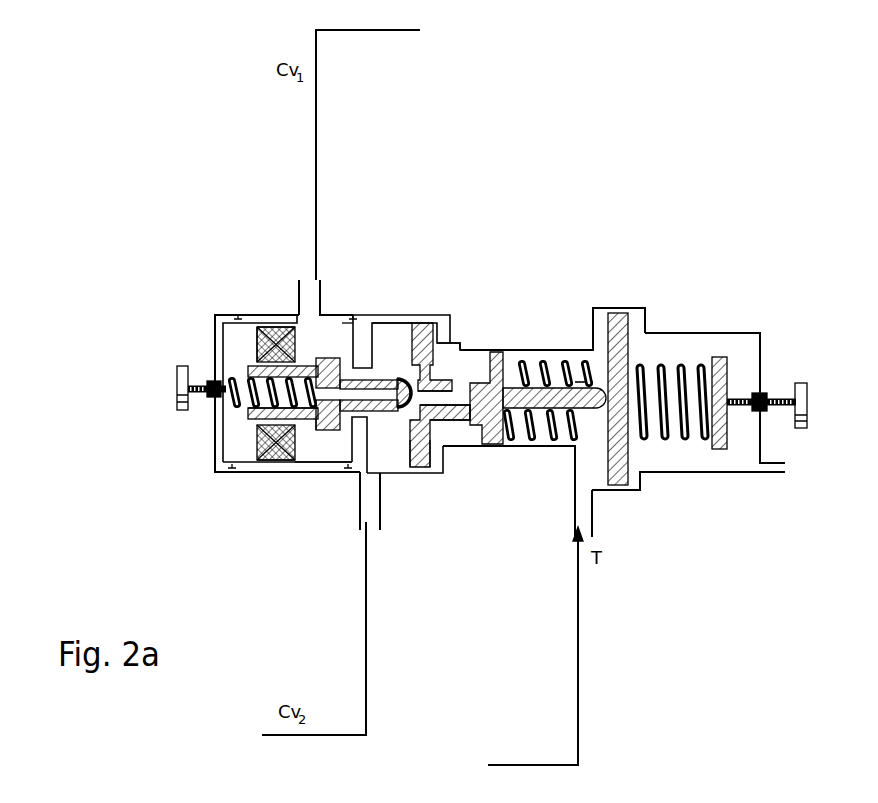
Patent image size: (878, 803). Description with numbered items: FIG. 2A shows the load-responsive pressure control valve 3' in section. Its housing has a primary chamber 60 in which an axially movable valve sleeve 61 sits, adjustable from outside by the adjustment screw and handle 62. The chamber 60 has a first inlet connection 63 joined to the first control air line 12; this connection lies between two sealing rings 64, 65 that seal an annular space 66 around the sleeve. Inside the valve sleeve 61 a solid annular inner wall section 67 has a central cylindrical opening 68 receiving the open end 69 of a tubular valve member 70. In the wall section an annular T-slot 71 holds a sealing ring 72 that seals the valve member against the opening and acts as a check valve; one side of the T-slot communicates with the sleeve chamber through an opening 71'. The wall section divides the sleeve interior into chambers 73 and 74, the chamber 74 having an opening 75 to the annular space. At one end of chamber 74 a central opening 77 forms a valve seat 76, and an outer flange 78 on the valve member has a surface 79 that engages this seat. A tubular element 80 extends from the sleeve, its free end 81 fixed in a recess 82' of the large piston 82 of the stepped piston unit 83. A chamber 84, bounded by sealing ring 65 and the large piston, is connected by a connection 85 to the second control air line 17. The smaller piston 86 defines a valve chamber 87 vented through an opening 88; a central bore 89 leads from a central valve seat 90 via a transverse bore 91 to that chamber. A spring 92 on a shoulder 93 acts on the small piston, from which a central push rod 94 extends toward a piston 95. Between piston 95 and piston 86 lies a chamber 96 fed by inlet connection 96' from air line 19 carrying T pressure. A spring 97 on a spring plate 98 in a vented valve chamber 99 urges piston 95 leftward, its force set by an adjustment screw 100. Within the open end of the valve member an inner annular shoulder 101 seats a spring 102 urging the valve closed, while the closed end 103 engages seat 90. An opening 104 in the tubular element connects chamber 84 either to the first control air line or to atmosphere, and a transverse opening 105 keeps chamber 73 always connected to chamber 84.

The Cv1 air line 12 is at (370, 31).
The Cv2 air line 17 is at (367, 662).
The air line 19 is at (508, 766).
The primary chamber 60 is at (215, 472).
The valve sleeve 61 is at (222, 432).
The adjustment screw and handle 62 is at (180, 385).
The first inlet connection 63 is at (300, 285).
The sealing ring 64 is at (232, 472).
The sealing ring 65 is at (348, 470).
The annular space 66 is at (262, 473).
The inner wall section 67 is at (275, 328).
The central cylindrical opening 68 is at (296, 358).
The open end 69 is at (250, 413).
The tubular valve member 70 is at (372, 323).
The annular T-slot 71 is at (258, 323).
The opening 71' is at (270, 471).
The sealing ring 72 is at (268, 340).
The chamber 73 is at (232, 453).
The valve sleeve chamber 74 is at (298, 460).
The opening 75 is at (317, 330).
The valve seat 76 is at (345, 414).
The central opening 77 is at (367, 436).
The outer flange 78 is at (330, 462).
The surface 79 is at (357, 350).
The tubular element 80 is at (430, 335).
The free end 81 is at (437, 467).
The large cross-sectional area piston 82 is at (440, 470).
The recess 82' is at (468, 329).
The stepped piston unit 83 is at (490, 447).
The chamber 84 is at (386, 345).
The connection 85 is at (362, 530).
The smaller cross-sectional area piston 86 is at (505, 447).
The valve chamber 87 is at (455, 340).
The opening 88 is at (472, 346).
The central bore 89 is at (462, 420).
The central valve seat 90 is at (449, 448).
The transverse bore 91 is at (473, 388).
The spring 92 is at (575, 380).
The shoulder 93 is at (545, 447).
The central push rod 94 is at (545, 395).
The piston 95 is at (620, 315).
The chamber 96 is at (548, 360).
The inlet connection 96' is at (566, 522).
The spring 97 is at (673, 370).
The spring plate 98 is at (718, 358).
The vented valve chamber 99 is at (708, 462).
The adjustment screw 100 is at (808, 405).
The inner annular shoulder 101 is at (320, 418).
The spring 102 is at (238, 380).
The closed end 103 is at (414, 468).
The opening 104 is at (410, 362).
The transverse opening 105 is at (398, 409).
The load-responsive pressure control valve 3' is at (671, 424).